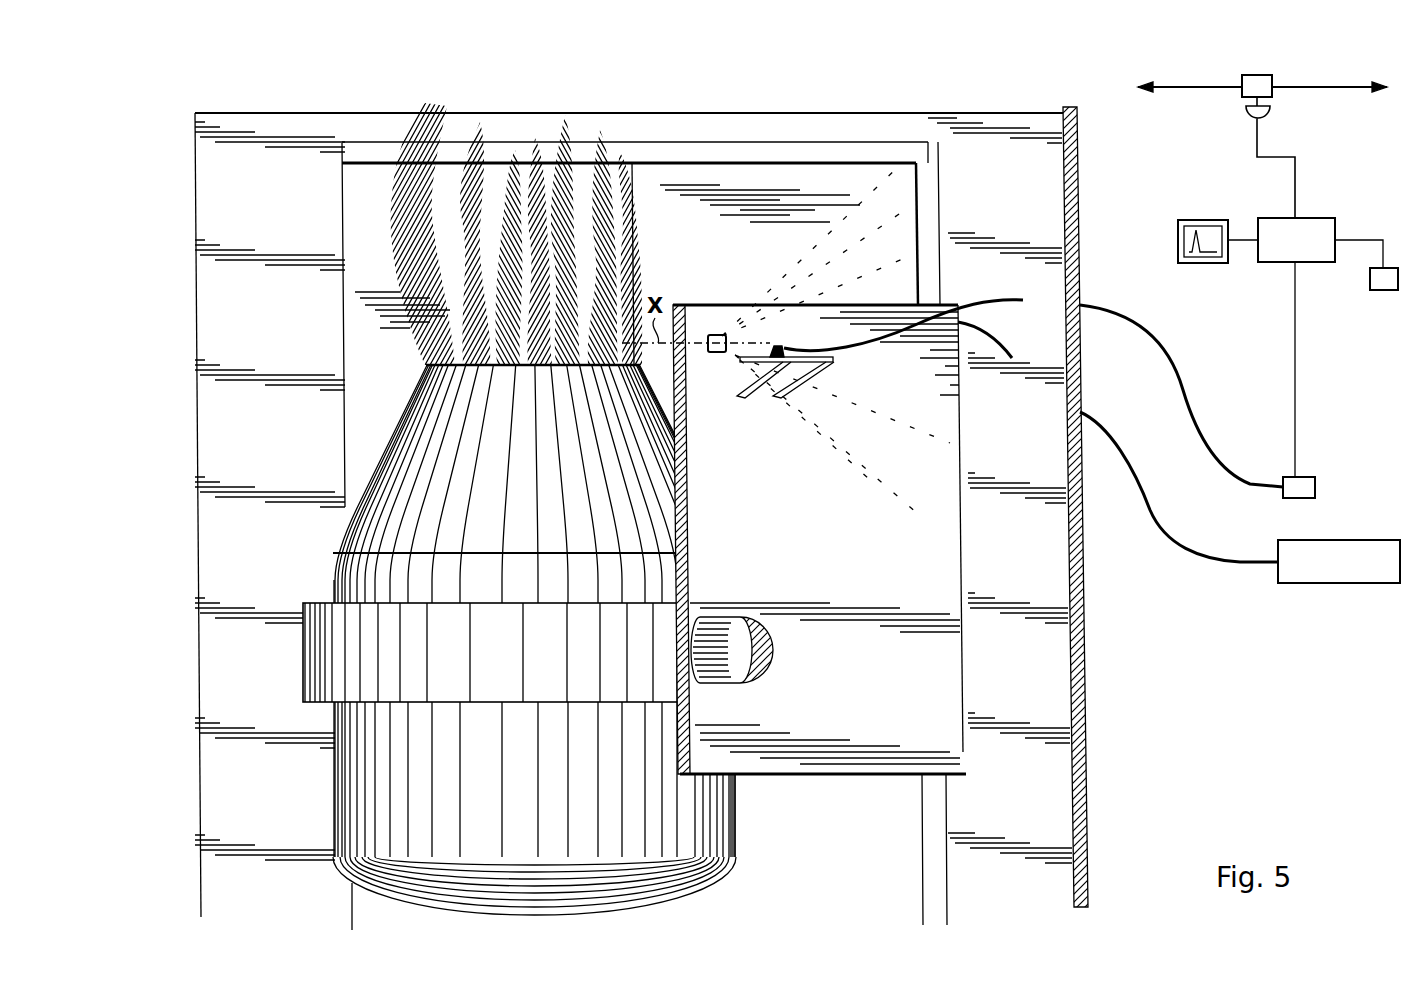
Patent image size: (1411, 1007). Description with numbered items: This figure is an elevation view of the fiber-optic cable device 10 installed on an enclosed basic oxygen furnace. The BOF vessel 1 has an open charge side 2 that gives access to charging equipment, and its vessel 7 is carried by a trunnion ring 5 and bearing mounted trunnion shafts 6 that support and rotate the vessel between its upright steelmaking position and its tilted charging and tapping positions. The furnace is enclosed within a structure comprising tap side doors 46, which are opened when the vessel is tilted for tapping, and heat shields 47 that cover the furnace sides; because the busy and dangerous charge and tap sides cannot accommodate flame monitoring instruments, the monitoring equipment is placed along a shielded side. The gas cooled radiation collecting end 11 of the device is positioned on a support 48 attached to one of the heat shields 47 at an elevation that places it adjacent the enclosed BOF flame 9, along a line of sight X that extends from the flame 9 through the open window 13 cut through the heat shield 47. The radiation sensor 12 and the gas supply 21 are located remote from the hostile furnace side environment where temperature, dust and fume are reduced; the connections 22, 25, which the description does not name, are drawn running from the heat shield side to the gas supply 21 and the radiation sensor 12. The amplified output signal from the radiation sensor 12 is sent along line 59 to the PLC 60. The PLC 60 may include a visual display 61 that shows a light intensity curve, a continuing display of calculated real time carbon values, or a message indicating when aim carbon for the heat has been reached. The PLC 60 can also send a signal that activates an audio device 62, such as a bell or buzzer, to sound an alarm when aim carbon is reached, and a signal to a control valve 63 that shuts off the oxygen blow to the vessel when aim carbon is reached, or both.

The BOF vessel 1 is at (762, 850).
The charge side 2 is at (440, 485).
The trunnion ring 5 is at (330, 661).
The trunnion shafts 6 is at (752, 655).
The vessel 7 is at (370, 805).
The BOF flame 9 is at (410, 228).
The fiber-optic cable device 10 is at (1373, 466).
The radiation collecting end 11 is at (777, 345).
The radiation sensor 12 is at (1316, 487).
The open window 13 is at (718, 355).
The gas supply 21 is at (1343, 573).
The cable 22 is at (1172, 540).
The cable 25 is at (1188, 413).
The tap side doors 46 is at (383, 272).
The heat shields 47 is at (908, 560).
The support 48 is at (818, 366).
The line 59 is at (1298, 358).
The PLC 60 is at (1328, 222).
The visual display 61 is at (1212, 222).
The audio device 62 is at (1371, 280).
The control valve 63 is at (1273, 95).